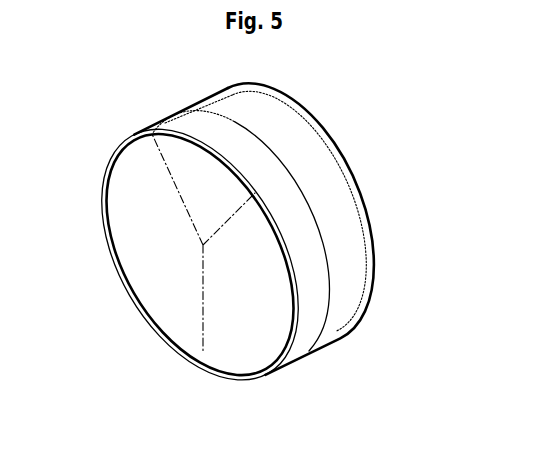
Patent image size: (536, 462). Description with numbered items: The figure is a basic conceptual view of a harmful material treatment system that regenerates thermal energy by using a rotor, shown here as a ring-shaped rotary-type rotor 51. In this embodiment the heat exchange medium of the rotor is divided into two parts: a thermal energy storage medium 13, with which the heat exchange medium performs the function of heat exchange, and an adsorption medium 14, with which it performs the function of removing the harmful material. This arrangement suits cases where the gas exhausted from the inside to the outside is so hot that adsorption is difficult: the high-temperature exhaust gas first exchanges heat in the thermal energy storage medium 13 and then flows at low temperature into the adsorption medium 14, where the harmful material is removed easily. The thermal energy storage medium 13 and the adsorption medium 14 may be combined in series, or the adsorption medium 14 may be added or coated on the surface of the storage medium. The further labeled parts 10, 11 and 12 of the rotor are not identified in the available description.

The ring 10 is at (242, 353).
The front rim edge 11 is at (147, 280).
The inner layer 12 is at (195, 178).
The thermal energy storage medium 13 is at (167, 123).
The adsorption medium 14 is at (205, 105).
The rotary-type rotor 51 is at (364, 141).